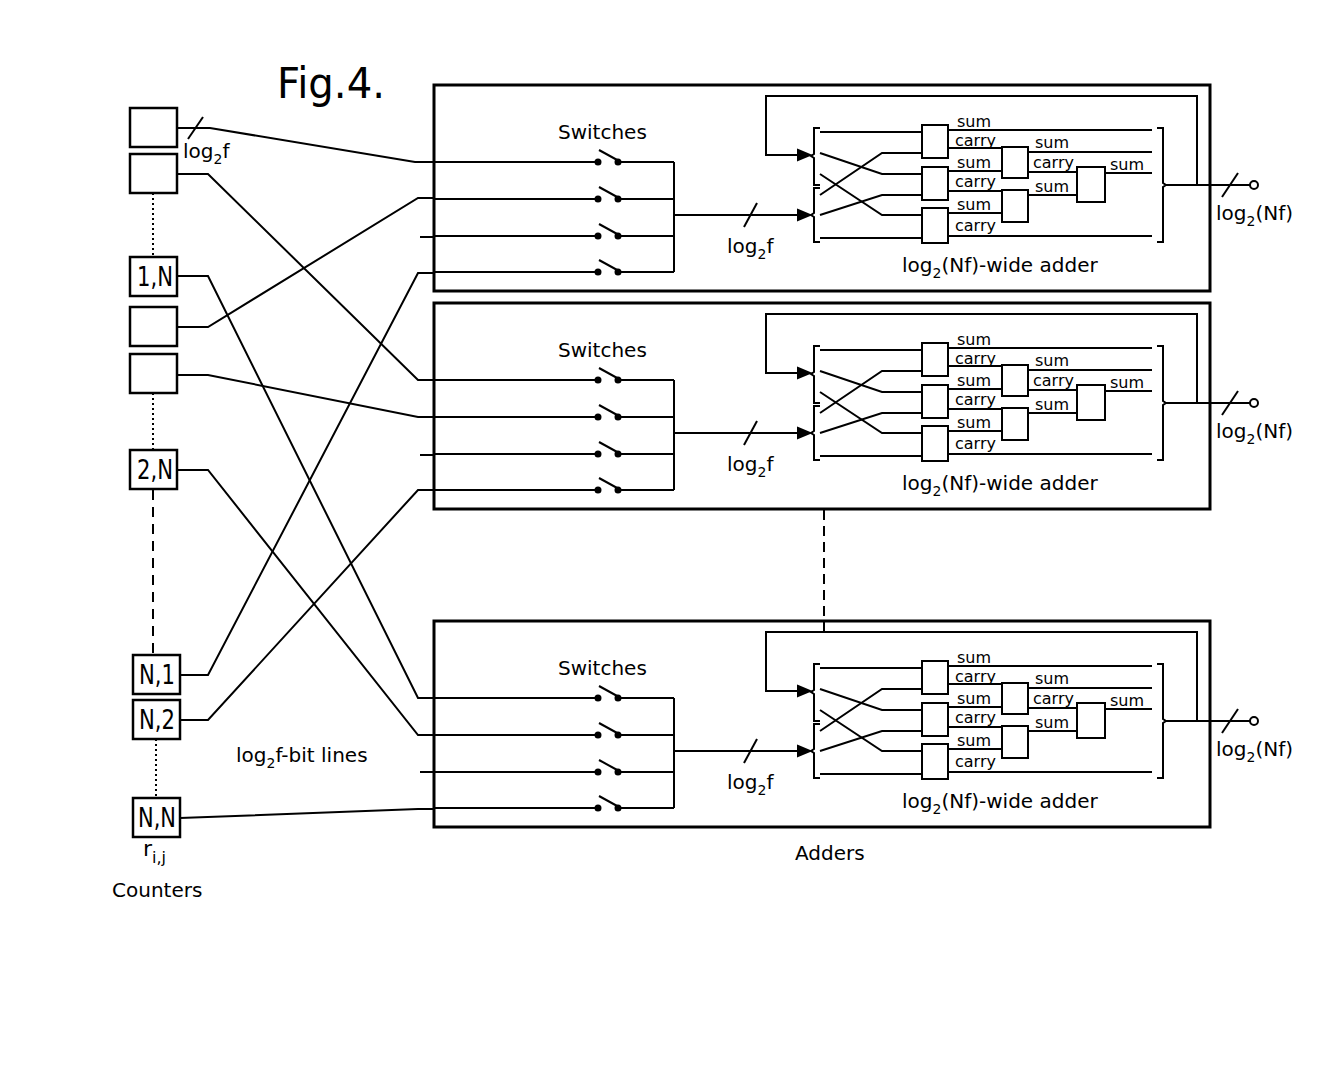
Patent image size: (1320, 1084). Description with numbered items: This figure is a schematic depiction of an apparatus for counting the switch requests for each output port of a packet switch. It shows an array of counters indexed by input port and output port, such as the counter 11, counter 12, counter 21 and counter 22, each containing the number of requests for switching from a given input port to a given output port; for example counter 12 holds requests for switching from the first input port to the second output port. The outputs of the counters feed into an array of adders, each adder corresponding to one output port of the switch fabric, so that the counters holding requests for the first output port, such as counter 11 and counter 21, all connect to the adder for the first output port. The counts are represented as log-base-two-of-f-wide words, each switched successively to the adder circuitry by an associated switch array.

The counter r1,1 11 is at (282, 135).
The counter r1,2 12 is at (282, 267).
The counter r2,1 21 is at (282, 272).
The counter r2,2 22 is at (282, 385).